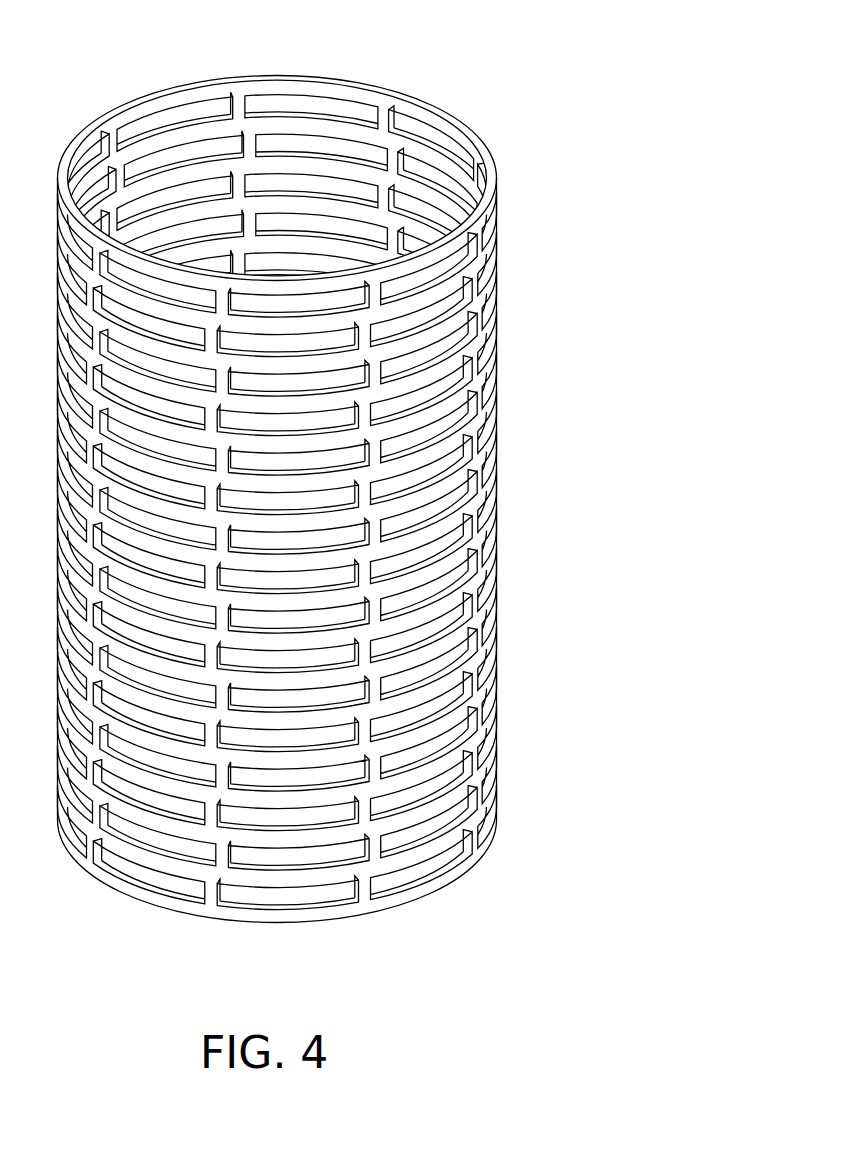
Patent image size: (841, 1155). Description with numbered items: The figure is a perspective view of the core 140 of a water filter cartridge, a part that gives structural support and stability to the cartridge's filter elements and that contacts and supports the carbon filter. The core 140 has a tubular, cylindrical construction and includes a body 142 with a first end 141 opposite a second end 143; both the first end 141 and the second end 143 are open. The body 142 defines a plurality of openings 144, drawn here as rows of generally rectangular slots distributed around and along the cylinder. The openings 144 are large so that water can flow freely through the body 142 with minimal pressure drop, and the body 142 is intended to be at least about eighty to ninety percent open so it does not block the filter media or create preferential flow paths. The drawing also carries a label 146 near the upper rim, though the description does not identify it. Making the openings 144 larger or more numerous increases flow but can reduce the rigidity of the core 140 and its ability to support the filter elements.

The core 140 is at (596, 231).
The first end 141 is at (371, 921).
The body 142 is at (456, 558).
The second end 143 is at (450, 108).
The openings 144 is at (356, 765).
The open top end 146 is at (150, 102).